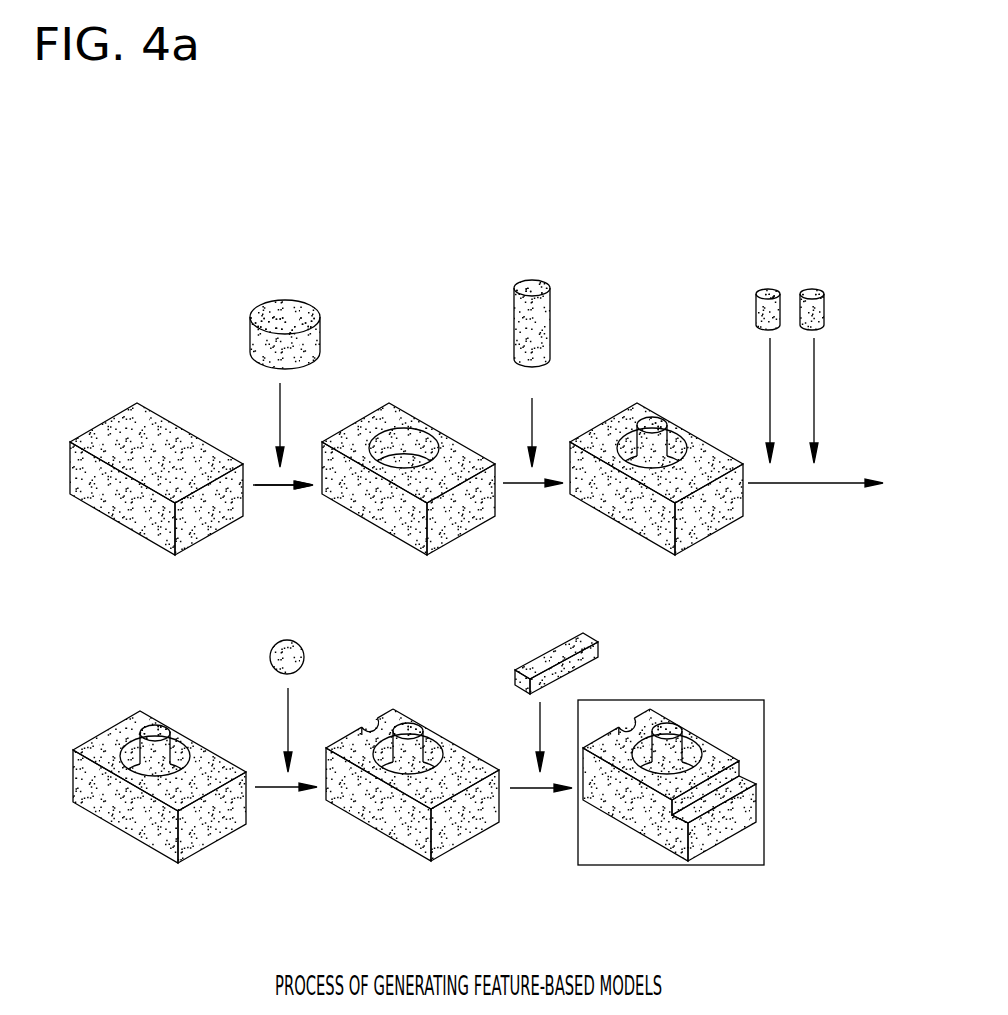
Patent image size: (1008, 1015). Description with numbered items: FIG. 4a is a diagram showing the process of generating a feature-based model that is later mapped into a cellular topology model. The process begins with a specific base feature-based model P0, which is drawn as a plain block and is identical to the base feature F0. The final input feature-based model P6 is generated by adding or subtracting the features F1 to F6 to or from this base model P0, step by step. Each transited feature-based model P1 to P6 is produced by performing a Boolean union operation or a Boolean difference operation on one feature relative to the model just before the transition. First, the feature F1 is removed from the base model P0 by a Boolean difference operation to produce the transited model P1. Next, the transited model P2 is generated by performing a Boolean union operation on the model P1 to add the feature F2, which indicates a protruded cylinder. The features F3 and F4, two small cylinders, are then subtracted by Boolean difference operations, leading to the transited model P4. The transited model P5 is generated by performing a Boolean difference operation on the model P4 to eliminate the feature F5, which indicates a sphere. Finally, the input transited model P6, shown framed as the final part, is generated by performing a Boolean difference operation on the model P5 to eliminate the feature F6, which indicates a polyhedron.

The base feature-based model P0 is at (156, 502).
The base feature F0 is at (156, 502).
The feature-based model F1 is at (320, 334).
The transited feature-based model P1 is at (408, 502).
The feature-based model indicating a protruded cylinder F2 is at (569, 323).
The transited feature-based model P2 is at (656, 502).
The feature-based model F3 is at (751, 328).
The feature-based model F4 is at (837, 328).
The transited feature-based model P4 is at (159, 810).
The feature-based model indicating a sphere F5 is at (315, 660).
The transited feature-based model P5 is at (412, 809).
The feature-based model indicating a polyhedron F6 is at (585, 663).
The input specific feature-based model (final part) P6 is at (671, 804).